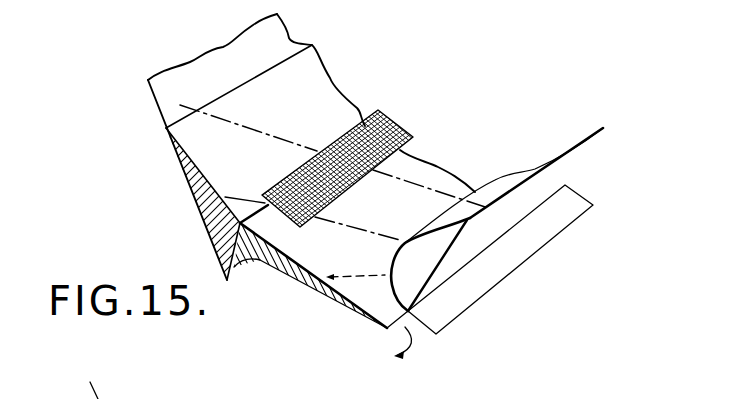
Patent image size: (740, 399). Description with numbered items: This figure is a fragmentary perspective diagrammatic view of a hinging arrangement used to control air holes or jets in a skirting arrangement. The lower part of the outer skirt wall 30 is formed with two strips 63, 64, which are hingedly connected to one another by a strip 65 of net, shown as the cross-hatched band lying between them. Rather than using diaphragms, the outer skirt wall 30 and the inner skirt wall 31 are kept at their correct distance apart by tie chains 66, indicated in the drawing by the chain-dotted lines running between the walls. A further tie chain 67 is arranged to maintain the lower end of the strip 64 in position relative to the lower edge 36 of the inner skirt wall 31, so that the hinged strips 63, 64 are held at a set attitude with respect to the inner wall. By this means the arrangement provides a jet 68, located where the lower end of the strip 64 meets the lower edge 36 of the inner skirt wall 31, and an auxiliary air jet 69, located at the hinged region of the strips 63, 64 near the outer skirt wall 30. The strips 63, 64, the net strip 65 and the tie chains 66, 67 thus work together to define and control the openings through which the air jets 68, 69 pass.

The outer skirt wall 30 is at (162, 88).
The inner skirt wall 31 is at (530, 178).
The lower edge of the inner skirt wall 36 is at (473, 282).
The strip 63 is at (202, 195).
The strip 64 is at (310, 288).
The strip of net 65 is at (349, 128).
The tie chains 66 is at (412, 183).
The further tie chain 67 is at (404, 311).
The jet 68 is at (410, 312).
The auxiliary air jet 69 is at (247, 240).